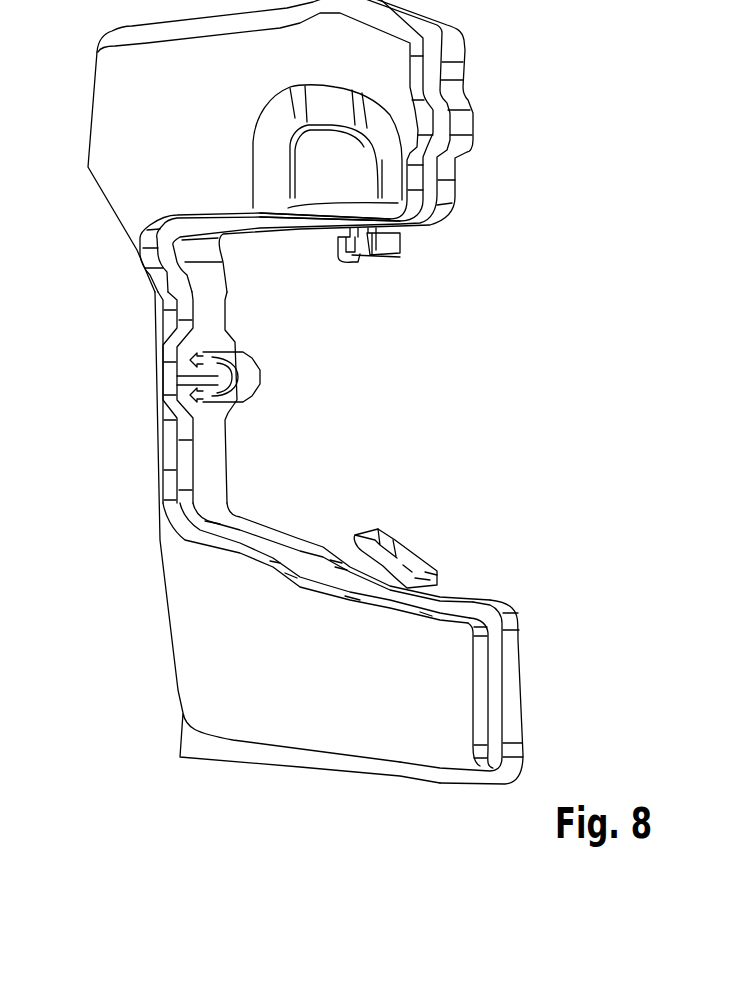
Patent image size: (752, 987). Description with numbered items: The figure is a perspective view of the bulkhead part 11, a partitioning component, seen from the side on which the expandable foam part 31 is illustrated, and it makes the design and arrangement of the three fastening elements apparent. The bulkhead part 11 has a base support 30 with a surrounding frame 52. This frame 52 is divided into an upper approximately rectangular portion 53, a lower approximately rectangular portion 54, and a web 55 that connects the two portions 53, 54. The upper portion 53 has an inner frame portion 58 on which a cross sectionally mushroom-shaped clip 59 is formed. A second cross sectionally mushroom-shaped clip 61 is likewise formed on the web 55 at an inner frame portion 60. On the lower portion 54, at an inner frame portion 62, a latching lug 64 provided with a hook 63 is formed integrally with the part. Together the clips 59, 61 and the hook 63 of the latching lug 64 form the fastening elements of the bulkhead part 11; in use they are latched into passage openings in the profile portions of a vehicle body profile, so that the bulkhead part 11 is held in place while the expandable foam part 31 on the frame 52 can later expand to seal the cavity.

The bulkhead part 11 is at (329, 412).
The base support 30 is at (368, 146).
The frame 52 is at (463, 125).
The expandable foam part 31 is at (190, 640).
The upper portion 53 is at (112, 117).
The lower portion 54 is at (287, 707).
The web 55 is at (157, 332).
The inner frame portion 58 is at (287, 237).
The clip 59 is at (390, 257).
The inner frame portion 60 is at (213, 452).
The clip 61 is at (263, 378).
The inner frame portion 62 is at (297, 540).
The hook 63 is at (415, 541).
The latching lug 64 is at (410, 570).